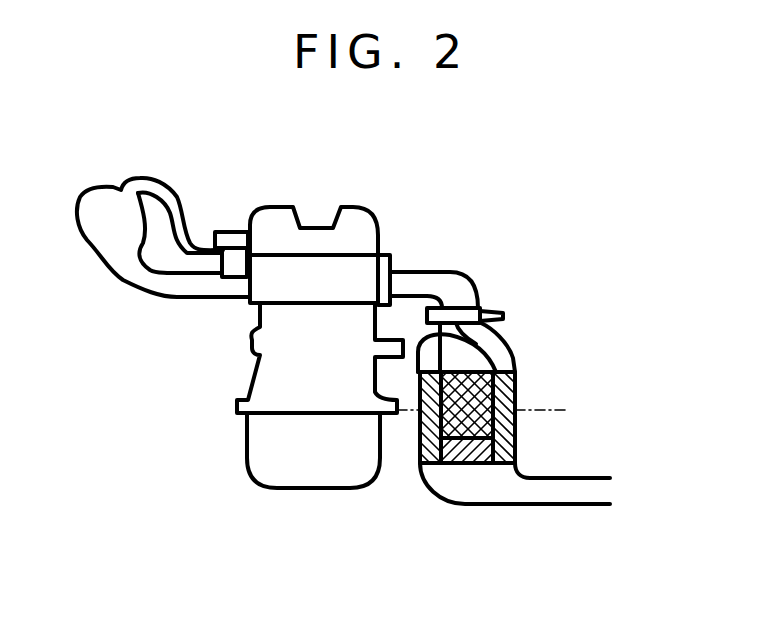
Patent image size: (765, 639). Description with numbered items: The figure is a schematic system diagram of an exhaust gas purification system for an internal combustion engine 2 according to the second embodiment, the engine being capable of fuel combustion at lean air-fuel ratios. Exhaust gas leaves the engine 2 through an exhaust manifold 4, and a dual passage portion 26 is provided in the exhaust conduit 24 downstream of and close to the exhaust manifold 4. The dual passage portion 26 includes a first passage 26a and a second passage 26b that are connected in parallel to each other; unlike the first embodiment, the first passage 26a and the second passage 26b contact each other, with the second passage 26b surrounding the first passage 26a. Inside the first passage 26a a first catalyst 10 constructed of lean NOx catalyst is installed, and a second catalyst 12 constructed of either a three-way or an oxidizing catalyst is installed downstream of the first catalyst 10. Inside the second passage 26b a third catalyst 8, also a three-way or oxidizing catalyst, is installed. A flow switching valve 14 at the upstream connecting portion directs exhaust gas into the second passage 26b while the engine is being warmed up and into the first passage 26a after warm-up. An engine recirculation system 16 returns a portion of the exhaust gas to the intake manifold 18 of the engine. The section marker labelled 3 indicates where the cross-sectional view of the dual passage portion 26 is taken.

The internal combustion engine 2 is at (351, 222).
The engine recirculation system 16 is at (232, 240).
The intake manifold 18 is at (177, 287).
The first catalyst 10 is at (420, 417).
The section line 3- 3 is at (548, 402).
The exhaust manifold 4 is at (420, 273).
The flow switching valve 14 is at (479, 305).
The dual passage portion 26 is at (516, 356).
The first passage 26a is at (460, 347).
The second passage 26b is at (500, 340).
The third catalyst 8 is at (505, 432).
The exhaust conduit 24 is at (575, 487).
The second catalyst 12 is at (472, 458).